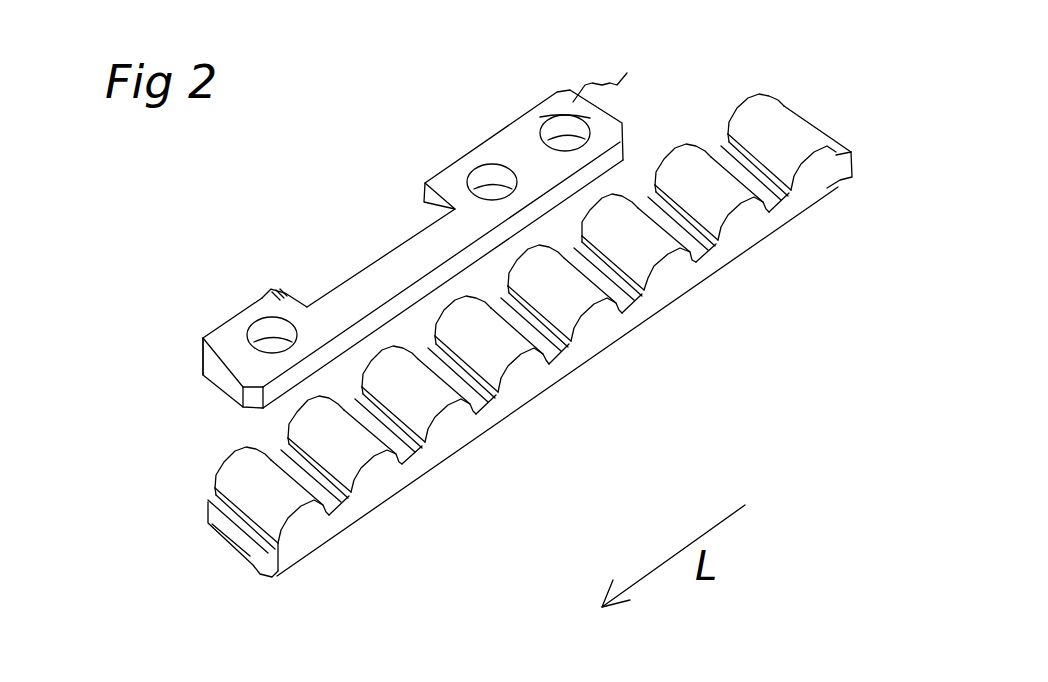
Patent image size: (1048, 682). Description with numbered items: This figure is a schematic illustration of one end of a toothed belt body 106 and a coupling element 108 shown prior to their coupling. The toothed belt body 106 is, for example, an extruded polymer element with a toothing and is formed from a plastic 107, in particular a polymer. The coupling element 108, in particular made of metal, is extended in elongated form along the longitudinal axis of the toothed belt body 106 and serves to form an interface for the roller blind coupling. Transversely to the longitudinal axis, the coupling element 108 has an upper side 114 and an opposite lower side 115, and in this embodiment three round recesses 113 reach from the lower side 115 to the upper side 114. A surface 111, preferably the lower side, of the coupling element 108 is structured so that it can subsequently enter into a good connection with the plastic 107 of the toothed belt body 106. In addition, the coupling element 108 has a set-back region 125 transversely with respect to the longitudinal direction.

The toothed belt body 106 is at (928, 185).
The plastic 107 is at (700, 402).
The coupling element 108 is at (648, 66).
The surface 111 is at (278, 290).
The recesses 113 is at (483, 180).
The upper side 114 is at (172, 389).
The lower side 115 is at (556, 116).
The set-back region 125 is at (390, 236).